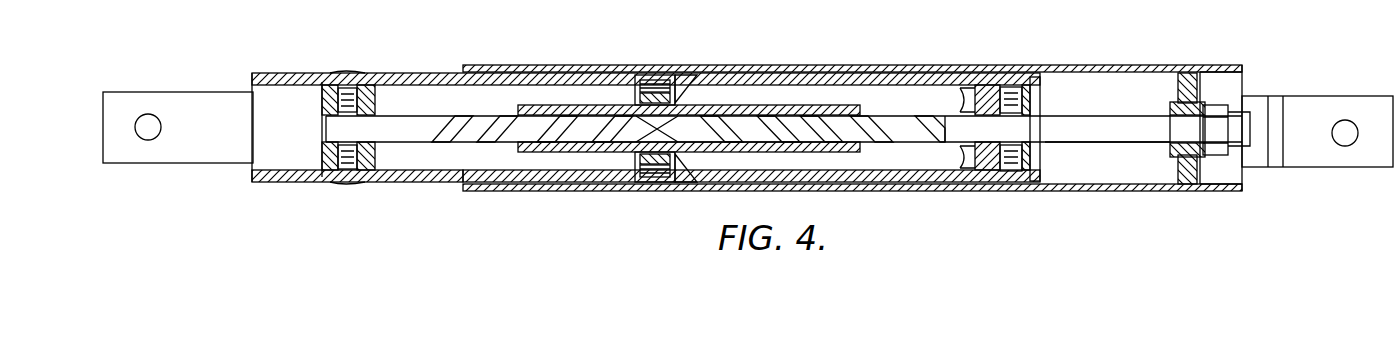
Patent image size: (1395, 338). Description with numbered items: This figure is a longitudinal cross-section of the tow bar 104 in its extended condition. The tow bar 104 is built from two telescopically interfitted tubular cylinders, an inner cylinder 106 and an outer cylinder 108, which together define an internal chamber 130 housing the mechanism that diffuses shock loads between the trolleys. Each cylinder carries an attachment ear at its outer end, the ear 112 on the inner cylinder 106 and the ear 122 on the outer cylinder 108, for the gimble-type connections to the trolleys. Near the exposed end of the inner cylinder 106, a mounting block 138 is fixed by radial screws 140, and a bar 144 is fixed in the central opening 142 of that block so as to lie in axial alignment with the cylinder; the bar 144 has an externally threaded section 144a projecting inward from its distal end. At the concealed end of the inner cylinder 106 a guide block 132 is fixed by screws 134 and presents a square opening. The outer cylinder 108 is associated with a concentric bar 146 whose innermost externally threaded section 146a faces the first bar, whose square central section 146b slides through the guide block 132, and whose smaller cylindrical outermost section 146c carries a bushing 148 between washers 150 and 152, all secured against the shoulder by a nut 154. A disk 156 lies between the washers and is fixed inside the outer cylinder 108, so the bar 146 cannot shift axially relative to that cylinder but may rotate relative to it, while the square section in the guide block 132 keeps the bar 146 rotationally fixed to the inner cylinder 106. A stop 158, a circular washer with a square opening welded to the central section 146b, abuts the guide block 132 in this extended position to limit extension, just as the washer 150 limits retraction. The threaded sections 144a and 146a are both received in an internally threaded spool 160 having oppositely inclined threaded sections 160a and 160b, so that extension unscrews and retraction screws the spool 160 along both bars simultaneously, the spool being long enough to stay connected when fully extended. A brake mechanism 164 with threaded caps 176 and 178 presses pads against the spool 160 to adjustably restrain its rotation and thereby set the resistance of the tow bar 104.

The tow bar 104 is at (848, 127).
The inner cylinder 106 is at (300, 75).
The outer cylinder 108 is at (838, 66).
The attachment ear 112 is at (190, 150).
The attachment ear 122 is at (1352, 155).
The internal chamber 130 is at (905, 175).
The guide block 132 is at (967, 95).
The screws 134 is at (1012, 87).
The mounting block 138 is at (322, 97).
The screws 140 is at (345, 80).
The central opening 142 is at (322, 140).
The bar 144 is at (503, 127).
The externally threaded section 144a is at (515, 130).
The bar 146 is at (1017, 120).
The externally threaded section 146a is at (895, 115).
The square-shaped central section 146b is at (1132, 142).
The cylindrical outermost section 146c is at (1250, 128).
The bushing 148 is at (1196, 152).
The washer 150 is at (1170, 110).
The washer 152 is at (1226, 192).
The nut 154 is at (1217, 105).
The disk 156 is at (1190, 78).
The stop 158 is at (967, 184).
The spool 160 is at (685, 127).
The threaded section 160a is at (615, 150).
The threaded section 160b is at (745, 108).
The brake mechanism 164 is at (688, 78).
The threaded cap 176 is at (660, 182).
The threaded cap 178 is at (643, 78).